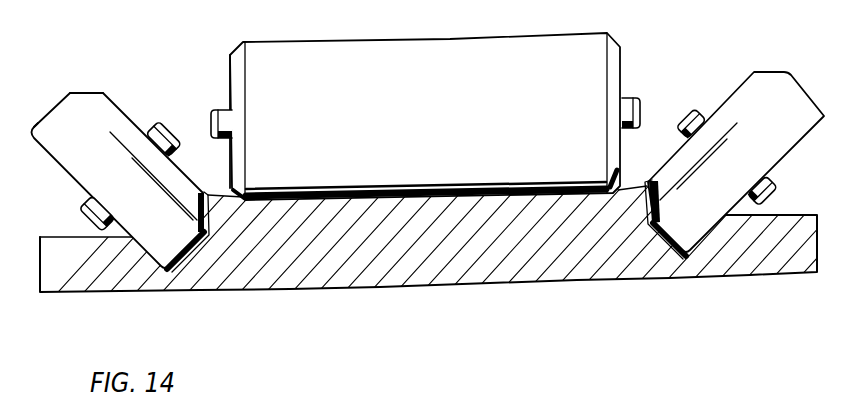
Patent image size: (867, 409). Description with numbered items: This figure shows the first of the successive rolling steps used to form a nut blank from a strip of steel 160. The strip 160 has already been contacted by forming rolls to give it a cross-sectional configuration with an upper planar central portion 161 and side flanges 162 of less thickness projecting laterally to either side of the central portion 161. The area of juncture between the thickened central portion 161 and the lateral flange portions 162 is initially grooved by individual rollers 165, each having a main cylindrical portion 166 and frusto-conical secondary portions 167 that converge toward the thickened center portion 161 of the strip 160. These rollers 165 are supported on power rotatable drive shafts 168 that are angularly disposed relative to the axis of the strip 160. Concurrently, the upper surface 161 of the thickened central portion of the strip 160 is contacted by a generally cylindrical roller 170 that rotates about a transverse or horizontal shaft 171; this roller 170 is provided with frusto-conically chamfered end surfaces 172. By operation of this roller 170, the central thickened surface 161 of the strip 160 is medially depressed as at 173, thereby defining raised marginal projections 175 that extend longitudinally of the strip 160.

The strip of steel 160 is at (370, 271).
The upper planar central portion 161 is at (207, 198).
The side flanges 162 is at (52, 232).
The individual rollers 165 is at (150, 177).
The main cylindrical portion 166 is at (54, 107).
The frusto-conical secondary portions 167 is at (82, 93).
The power rotatable drive shafts 168 is at (162, 128).
The generally cylindrical roller 170 is at (414, 164).
The transverse or horizontal shaft 171 is at (221, 111).
The frusto-conically chamfered end surfaces 172 is at (237, 79).
The medial depression 173 is at (470, 198).
The raised marginal projections 175 is at (226, 204).